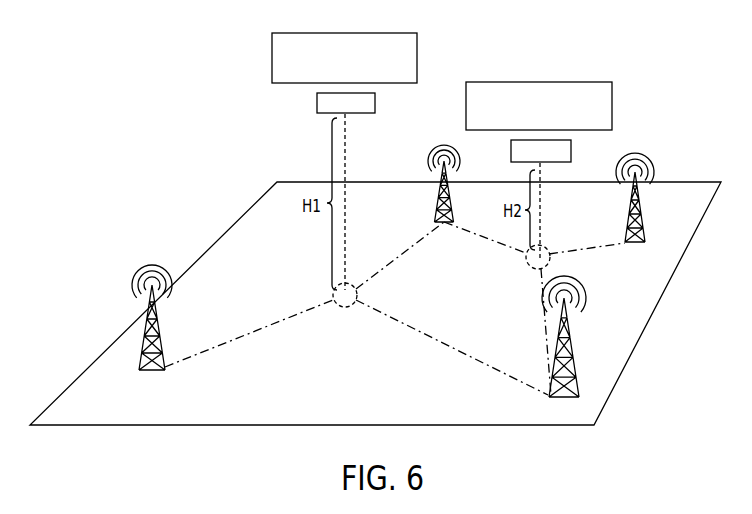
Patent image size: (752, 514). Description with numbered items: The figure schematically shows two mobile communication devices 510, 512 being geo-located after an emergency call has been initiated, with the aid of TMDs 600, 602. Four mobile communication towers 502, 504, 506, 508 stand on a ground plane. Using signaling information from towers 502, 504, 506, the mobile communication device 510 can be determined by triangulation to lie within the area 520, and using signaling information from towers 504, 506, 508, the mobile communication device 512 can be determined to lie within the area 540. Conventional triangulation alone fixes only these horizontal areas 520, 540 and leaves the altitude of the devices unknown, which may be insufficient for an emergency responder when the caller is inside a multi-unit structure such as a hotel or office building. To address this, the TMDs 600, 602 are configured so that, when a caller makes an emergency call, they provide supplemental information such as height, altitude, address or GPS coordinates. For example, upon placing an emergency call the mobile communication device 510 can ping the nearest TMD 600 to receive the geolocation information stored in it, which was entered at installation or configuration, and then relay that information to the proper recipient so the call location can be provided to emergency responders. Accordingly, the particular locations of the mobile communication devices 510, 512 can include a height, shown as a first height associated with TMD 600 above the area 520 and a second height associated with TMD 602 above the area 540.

The mobile communication tower 502 is at (158, 328).
The mobile communication tower 504 is at (448, 195).
The mobile communication tower 506 is at (569, 345).
The mobile communication tower 508 is at (647, 215).
The mobile communication device 510 is at (417, 57).
The mobile communication device 512 is at (566, 80).
The area 520 is at (340, 310).
The area 540 is at (527, 266).
The TMD 600 is at (375, 103).
The TMD 602 is at (571, 157).